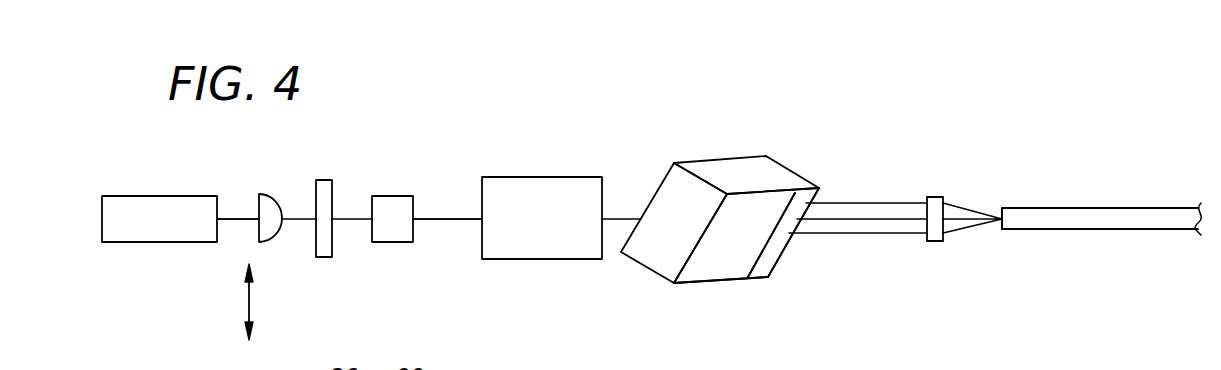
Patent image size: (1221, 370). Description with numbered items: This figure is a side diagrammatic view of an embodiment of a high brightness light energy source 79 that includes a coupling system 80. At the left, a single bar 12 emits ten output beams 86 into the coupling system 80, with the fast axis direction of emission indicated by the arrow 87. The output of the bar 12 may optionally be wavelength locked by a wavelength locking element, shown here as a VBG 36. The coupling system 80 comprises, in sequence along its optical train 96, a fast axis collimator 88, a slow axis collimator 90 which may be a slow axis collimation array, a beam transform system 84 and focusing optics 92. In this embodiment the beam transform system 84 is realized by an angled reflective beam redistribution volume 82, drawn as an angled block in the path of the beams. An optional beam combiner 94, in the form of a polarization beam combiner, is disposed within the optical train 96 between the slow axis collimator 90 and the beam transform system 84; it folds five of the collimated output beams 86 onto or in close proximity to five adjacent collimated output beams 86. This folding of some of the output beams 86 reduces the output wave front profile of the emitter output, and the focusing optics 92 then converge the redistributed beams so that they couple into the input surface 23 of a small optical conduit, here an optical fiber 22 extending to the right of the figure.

The bar 12 is at (158, 196).
The output beams 86 is at (237, 219).
The fast axis collimator 88 is at (271, 241).
The arrow 87 is at (249, 305).
The VBG 36 is at (322, 180).
The slow axis collimator 90 is at (393, 196).
The high brightness light energy source 79 is at (421, 110).
The coupling system 80 is at (622, 124).
The optical train 96 is at (448, 219).
The beam combiner 94 is at (541, 259).
The angled reflective beam redistribution volume 82 is at (714, 160).
The beam transform system 84 is at (722, 283).
The focusing optics 92 is at (934, 197).
The optical fiber 22 is at (1099, 208).
The input surface 23 is at (1000, 227).